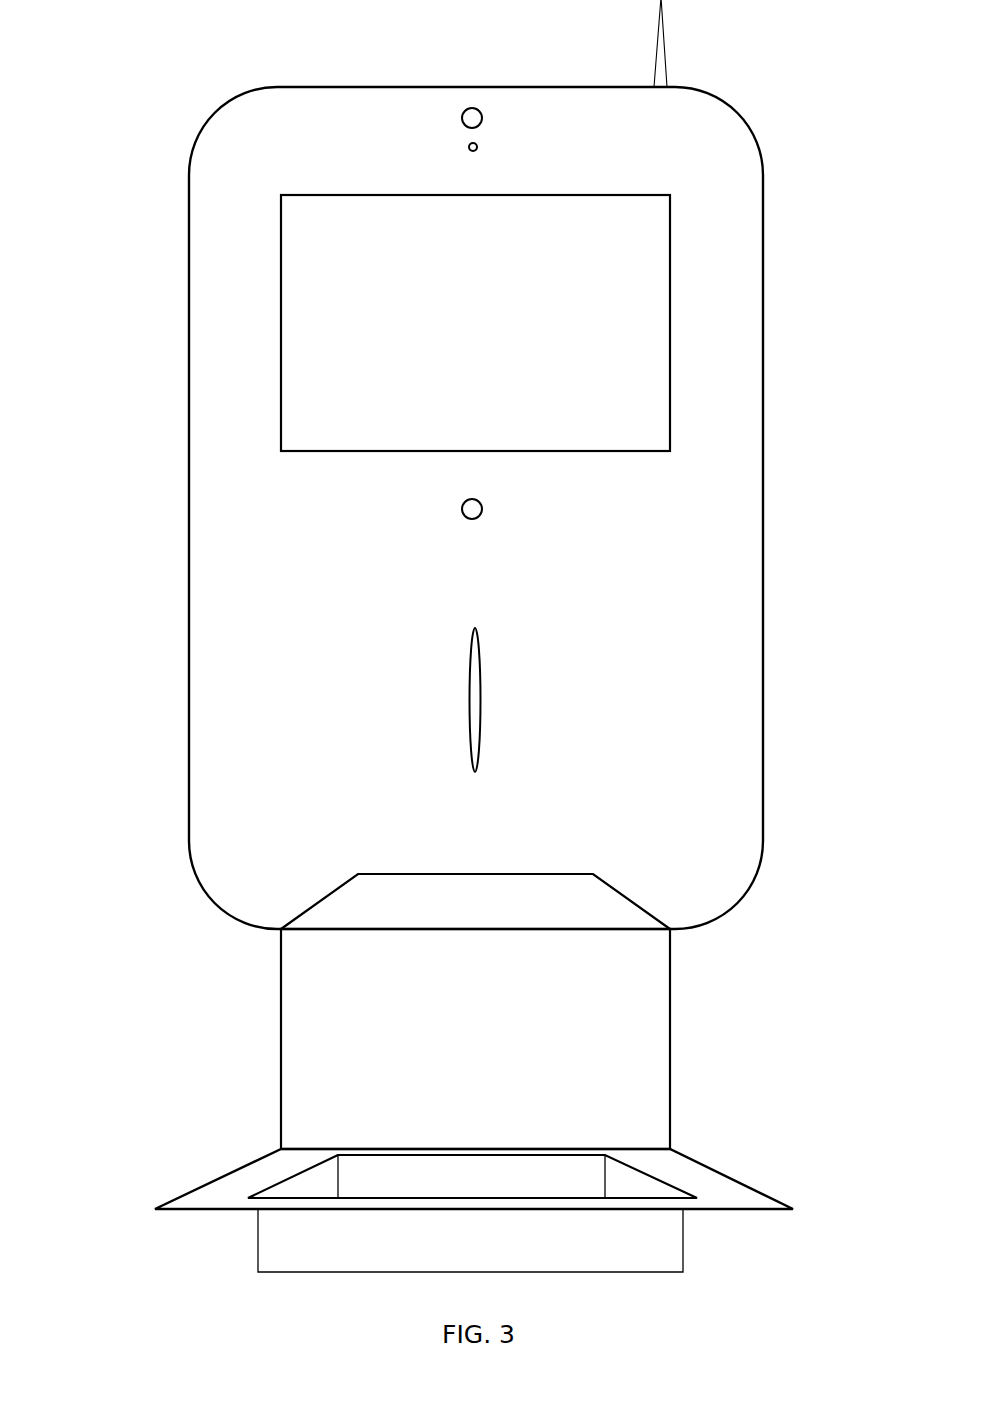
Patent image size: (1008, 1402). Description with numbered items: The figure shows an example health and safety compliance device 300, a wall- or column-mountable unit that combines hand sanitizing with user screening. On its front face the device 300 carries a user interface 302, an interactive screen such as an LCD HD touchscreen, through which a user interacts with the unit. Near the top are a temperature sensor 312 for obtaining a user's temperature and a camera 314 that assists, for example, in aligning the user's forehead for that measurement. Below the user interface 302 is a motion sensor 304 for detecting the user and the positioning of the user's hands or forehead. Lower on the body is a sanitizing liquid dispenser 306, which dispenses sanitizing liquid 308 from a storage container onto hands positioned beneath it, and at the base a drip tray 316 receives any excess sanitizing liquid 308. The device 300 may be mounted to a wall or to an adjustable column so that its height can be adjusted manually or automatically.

The health and safety compliance device 300 is at (66, 149).
The user interface 302 is at (289, 317).
The motion sensor 304 is at (482, 506).
The sanitizing liquid dispenser 306 is at (480, 874).
The sanitizing liquid 308 is at (480, 705).
The temperature sensor 312 is at (481, 113).
The camera 314 is at (477, 144).
The drip tray 316 is at (533, 1192).